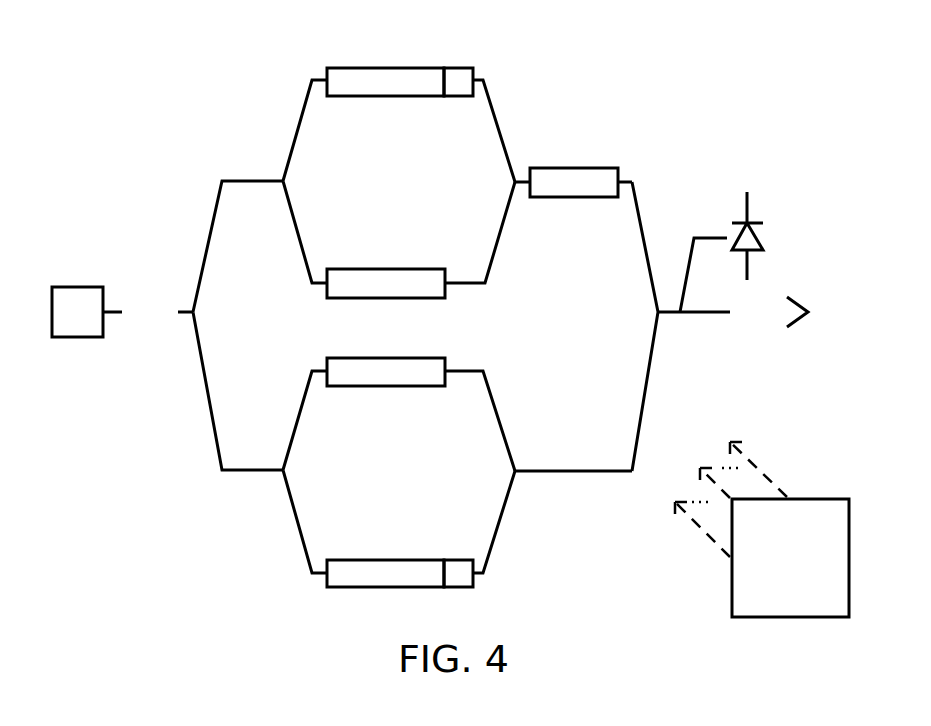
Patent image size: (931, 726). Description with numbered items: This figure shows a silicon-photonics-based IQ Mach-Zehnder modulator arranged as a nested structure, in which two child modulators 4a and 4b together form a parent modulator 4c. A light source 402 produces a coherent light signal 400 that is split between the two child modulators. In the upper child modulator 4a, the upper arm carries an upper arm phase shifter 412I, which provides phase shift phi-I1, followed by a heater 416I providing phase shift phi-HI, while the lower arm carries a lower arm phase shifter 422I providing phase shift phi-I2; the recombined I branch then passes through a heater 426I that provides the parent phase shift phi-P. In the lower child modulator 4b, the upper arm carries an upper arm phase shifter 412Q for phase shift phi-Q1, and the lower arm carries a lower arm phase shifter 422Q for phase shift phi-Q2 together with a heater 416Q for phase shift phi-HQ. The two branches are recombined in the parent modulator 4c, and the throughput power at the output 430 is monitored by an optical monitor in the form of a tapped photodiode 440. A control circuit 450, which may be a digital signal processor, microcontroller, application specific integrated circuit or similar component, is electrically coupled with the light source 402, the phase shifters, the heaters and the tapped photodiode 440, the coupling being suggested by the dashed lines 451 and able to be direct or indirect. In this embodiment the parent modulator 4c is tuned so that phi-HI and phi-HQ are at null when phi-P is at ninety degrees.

The coherent light signal 400 is at (193, 325).
The light source 402 is at (77, 312).
The child modulator 4a is at (205, 150).
The child modulator 4b is at (205, 472).
The parent modulator 4c is at (693, 123).
The upper arm phase shifter 412I is at (385, 65).
The heater 416I is at (482, 65).
The lower arm phase shifter 422I is at (421, 240).
The heater 426I is at (581, 169).
The upper arm phase shifter 412Q is at (421, 401).
The lower arm phase shifter 422Q is at (385, 592).
The heater 416Q is at (482, 580).
The throughput power 430 is at (733, 312).
The tapped photodiode 440 is at (746, 252).
The control circuit 450 is at (790, 558).
The dashed lines 451 is at (758, 442).